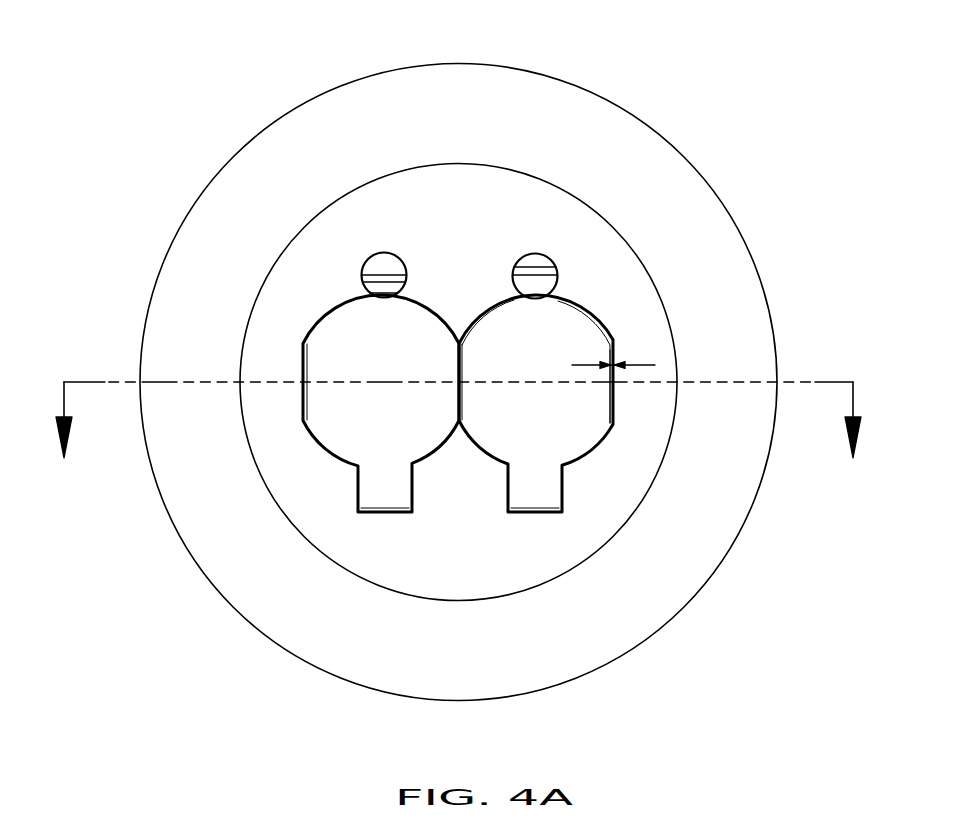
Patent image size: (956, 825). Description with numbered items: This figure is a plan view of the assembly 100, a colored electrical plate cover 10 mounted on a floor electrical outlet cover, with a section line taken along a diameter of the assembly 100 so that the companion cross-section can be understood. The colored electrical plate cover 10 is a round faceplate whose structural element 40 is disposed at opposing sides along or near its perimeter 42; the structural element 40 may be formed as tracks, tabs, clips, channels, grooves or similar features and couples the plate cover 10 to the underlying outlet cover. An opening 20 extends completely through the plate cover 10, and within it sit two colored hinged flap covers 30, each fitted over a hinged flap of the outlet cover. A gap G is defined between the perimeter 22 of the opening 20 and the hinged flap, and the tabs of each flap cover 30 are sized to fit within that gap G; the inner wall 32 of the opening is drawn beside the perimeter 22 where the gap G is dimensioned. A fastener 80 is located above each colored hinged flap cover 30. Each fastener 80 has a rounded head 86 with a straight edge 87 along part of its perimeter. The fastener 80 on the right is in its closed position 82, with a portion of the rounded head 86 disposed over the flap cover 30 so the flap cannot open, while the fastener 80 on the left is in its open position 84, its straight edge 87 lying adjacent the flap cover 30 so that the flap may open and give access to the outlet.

The assembly 100 is at (183, 93).
The colored electrical plate cover 10 is at (199, 292).
The opening 20 is at (613, 348).
The perimeter of the opening 22 is at (614, 409).
The colored hinged flap cover 30 is at (373, 367).
The inner surface 32 is at (611, 400).
The structural element 40 is at (140, 392).
The perimeter of the colored electrical plate cover 42 is at (130, 352).
The fastener 80 is at (385, 268).
The closed position 82 is at (553, 252).
The open position 84 is at (403, 253).
The rounded head 86 is at (368, 266).
The straight edge 87 is at (380, 296).
The gap G is at (611, 352).